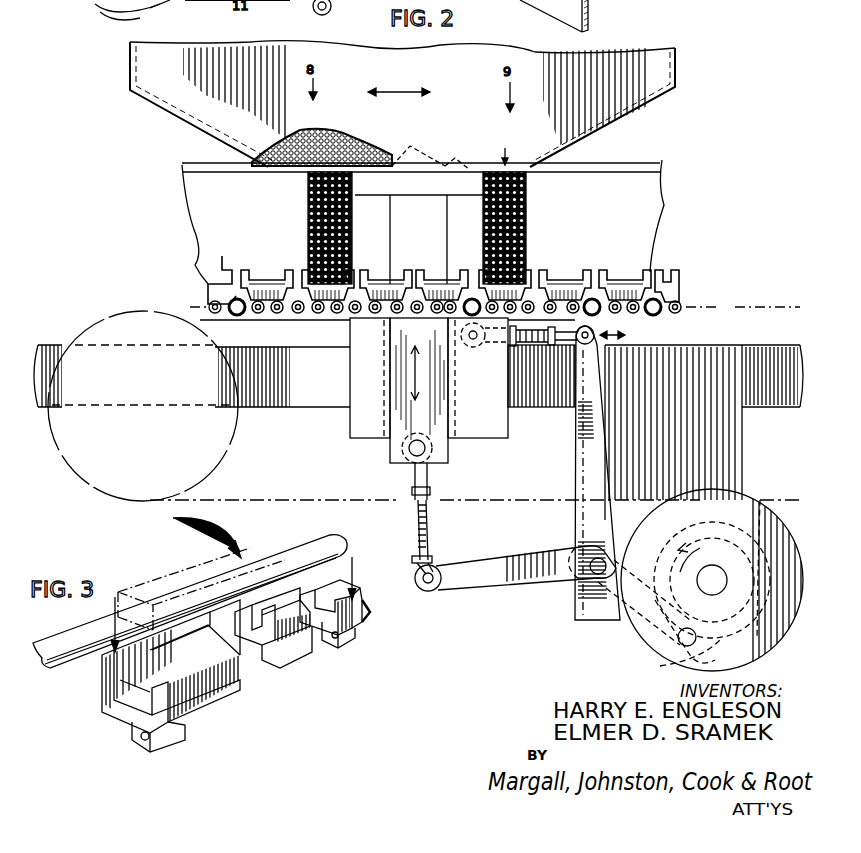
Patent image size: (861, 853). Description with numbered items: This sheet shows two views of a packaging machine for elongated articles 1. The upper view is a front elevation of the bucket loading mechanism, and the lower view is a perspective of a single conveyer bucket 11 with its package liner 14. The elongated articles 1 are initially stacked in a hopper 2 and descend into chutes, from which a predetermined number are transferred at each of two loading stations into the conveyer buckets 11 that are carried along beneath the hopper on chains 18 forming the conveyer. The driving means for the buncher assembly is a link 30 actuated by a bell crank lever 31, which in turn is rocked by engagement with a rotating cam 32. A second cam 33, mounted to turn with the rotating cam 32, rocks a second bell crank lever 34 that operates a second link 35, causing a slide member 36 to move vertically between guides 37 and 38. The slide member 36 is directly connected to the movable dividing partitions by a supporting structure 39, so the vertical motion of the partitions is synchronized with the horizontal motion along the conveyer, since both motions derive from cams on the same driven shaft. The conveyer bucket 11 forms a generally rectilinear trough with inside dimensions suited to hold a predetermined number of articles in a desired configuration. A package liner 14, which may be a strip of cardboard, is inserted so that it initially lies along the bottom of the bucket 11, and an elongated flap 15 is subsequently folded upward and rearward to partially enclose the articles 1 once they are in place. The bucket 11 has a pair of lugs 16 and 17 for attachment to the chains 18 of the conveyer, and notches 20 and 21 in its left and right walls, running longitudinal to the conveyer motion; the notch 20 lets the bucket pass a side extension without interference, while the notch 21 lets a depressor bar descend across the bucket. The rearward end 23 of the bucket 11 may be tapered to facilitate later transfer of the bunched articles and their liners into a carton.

In FIG. 2, the elongated articles 1 is at (355, 150).
In FIG. 2, the hopper 2 is at (168, 115).
In FIG. 2, the conveyer bucket 11 is at (248, 268).
In FIG. 3, the conveyer bucket 11 is at (248, 722).
In FIG. 2, the package liner 14 is at (80, 6).
In FIG. 3, the package liner 14 is at (255, 539).
In FIG. 2, the elongated flap 15 is at (100, 12).
In FIG. 3, the elongated flap 15 is at (97, 637).
In FIG. 2, the lug 16 is at (268, 310).
In FIG. 3, the lug 16 is at (190, 742).
In FIG. 3, the lug 17 is at (322, 665).
In FIG. 2, the chain 18 is at (312, 310).
In FIG. 3, the notch 20 is at (252, 672).
In FIG. 3, the notch 21 is at (288, 655).
In FIG. 3, the rearward end 23 is at (368, 618).
In FIG. 2, the link 30 is at (533, 408).
In FIG. 2, the bell crank lever 31 is at (575, 483).
In FIG. 2, the rotating cam 32 is at (780, 642).
In FIG. 2, the second cam 33 is at (660, 666).
In FIG. 2, the second bell crank lever 34 is at (538, 578).
In FIG. 2, the second link 35 is at (434, 505).
In FIG. 2, the slide member 36 is at (396, 448).
In FIG. 2, the guide 37 is at (356, 416).
In FIG. 2, the guide 38 is at (474, 428).
In FIG. 2, the supporting structure 39 is at (392, 190).